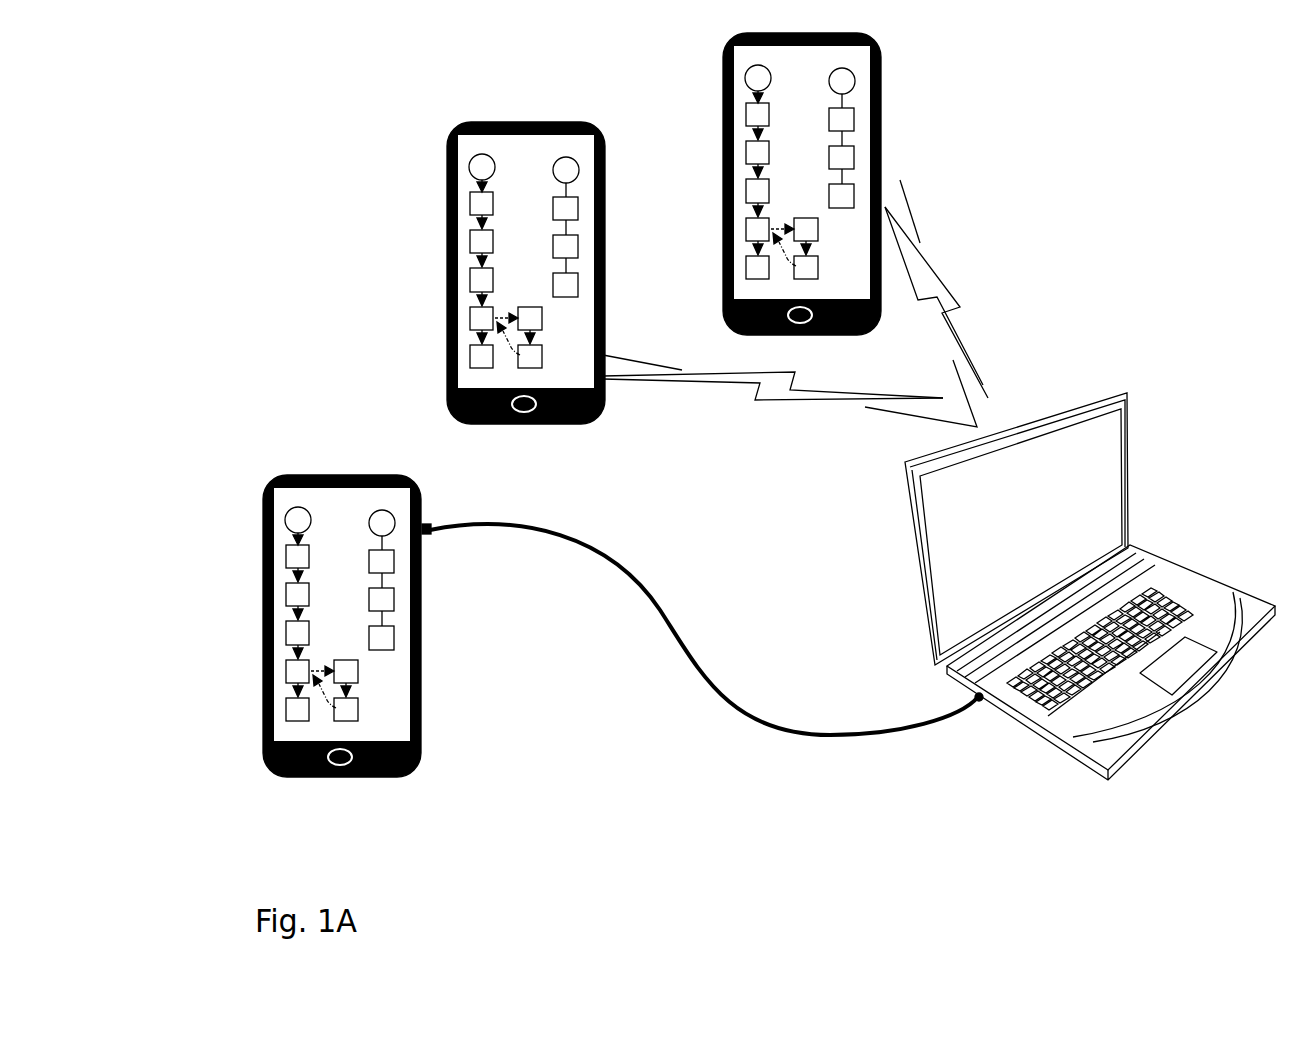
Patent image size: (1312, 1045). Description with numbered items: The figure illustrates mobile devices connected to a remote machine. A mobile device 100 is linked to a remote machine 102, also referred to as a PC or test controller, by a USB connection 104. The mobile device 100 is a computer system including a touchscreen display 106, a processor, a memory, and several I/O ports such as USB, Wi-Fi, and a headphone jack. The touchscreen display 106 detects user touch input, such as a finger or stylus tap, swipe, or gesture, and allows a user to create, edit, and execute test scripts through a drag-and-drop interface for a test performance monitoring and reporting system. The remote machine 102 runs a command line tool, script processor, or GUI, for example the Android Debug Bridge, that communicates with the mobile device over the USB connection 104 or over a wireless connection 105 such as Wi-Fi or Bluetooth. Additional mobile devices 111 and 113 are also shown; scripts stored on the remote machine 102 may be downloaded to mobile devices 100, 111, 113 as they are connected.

The mobile device 100 is at (279, 626).
The remote machine 102 is at (920, 562).
The USB connection 104 is at (687, 655).
The wireless connection 105 is at (785, 413).
The touchscreen display 106 is at (317, 530).
The mobile device 111 is at (437, 222).
The mobile device 113 is at (713, 98).